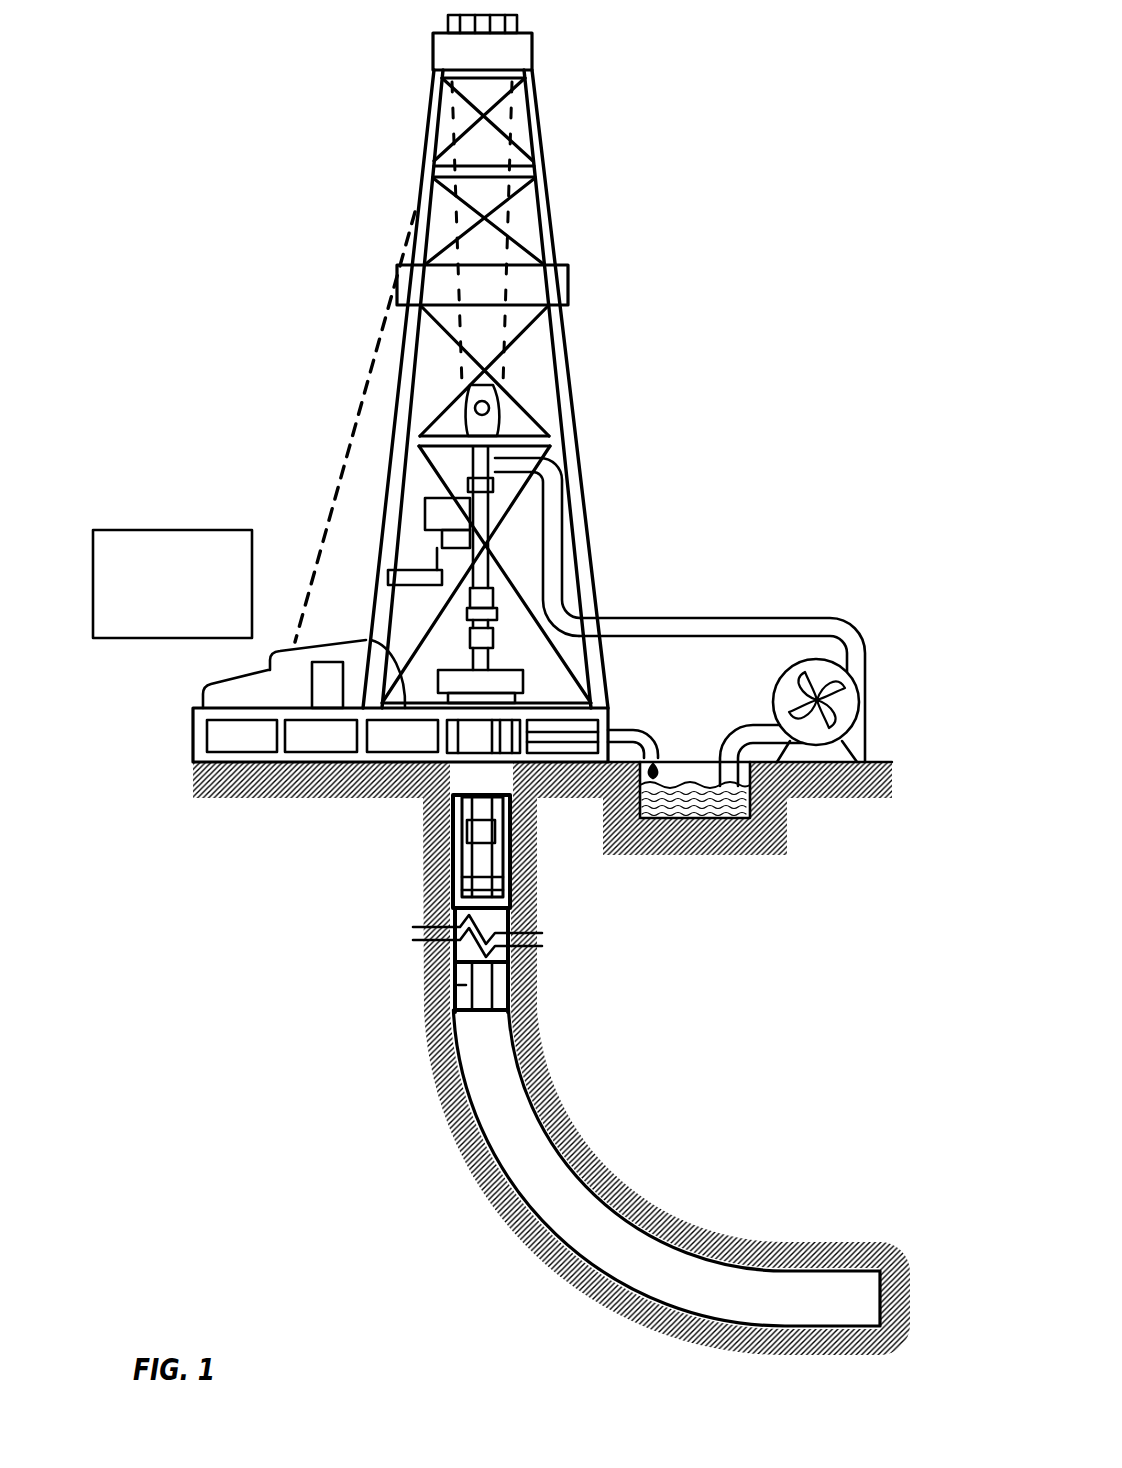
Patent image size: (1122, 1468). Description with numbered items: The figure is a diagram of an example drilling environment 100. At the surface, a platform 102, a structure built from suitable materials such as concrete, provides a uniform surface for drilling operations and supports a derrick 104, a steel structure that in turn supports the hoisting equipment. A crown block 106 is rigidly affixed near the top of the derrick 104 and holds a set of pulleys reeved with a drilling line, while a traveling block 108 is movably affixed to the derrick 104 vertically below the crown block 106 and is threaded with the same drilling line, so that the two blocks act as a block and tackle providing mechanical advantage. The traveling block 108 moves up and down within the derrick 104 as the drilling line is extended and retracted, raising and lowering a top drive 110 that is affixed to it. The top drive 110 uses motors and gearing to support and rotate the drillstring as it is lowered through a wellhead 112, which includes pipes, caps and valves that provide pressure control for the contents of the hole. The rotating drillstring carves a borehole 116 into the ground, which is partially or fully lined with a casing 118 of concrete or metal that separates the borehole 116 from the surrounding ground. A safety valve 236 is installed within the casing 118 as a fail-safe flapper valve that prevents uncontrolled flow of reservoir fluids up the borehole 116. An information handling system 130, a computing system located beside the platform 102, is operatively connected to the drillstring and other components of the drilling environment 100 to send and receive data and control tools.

The drilling environment 100 is at (298, 123).
The platform 102 is at (203, 737).
The derrick 104 is at (428, 193).
The crown block 106 is at (517, 23).
The traveling block 108 is at (498, 410).
The top drive 110 is at (483, 505).
The wellhead 112 is at (500, 680).
The borehole 116 is at (605, 1243).
The casing 118 is at (515, 1050).
The information handling system 130 is at (243, 670).
The safety valve 236 is at (452, 993).